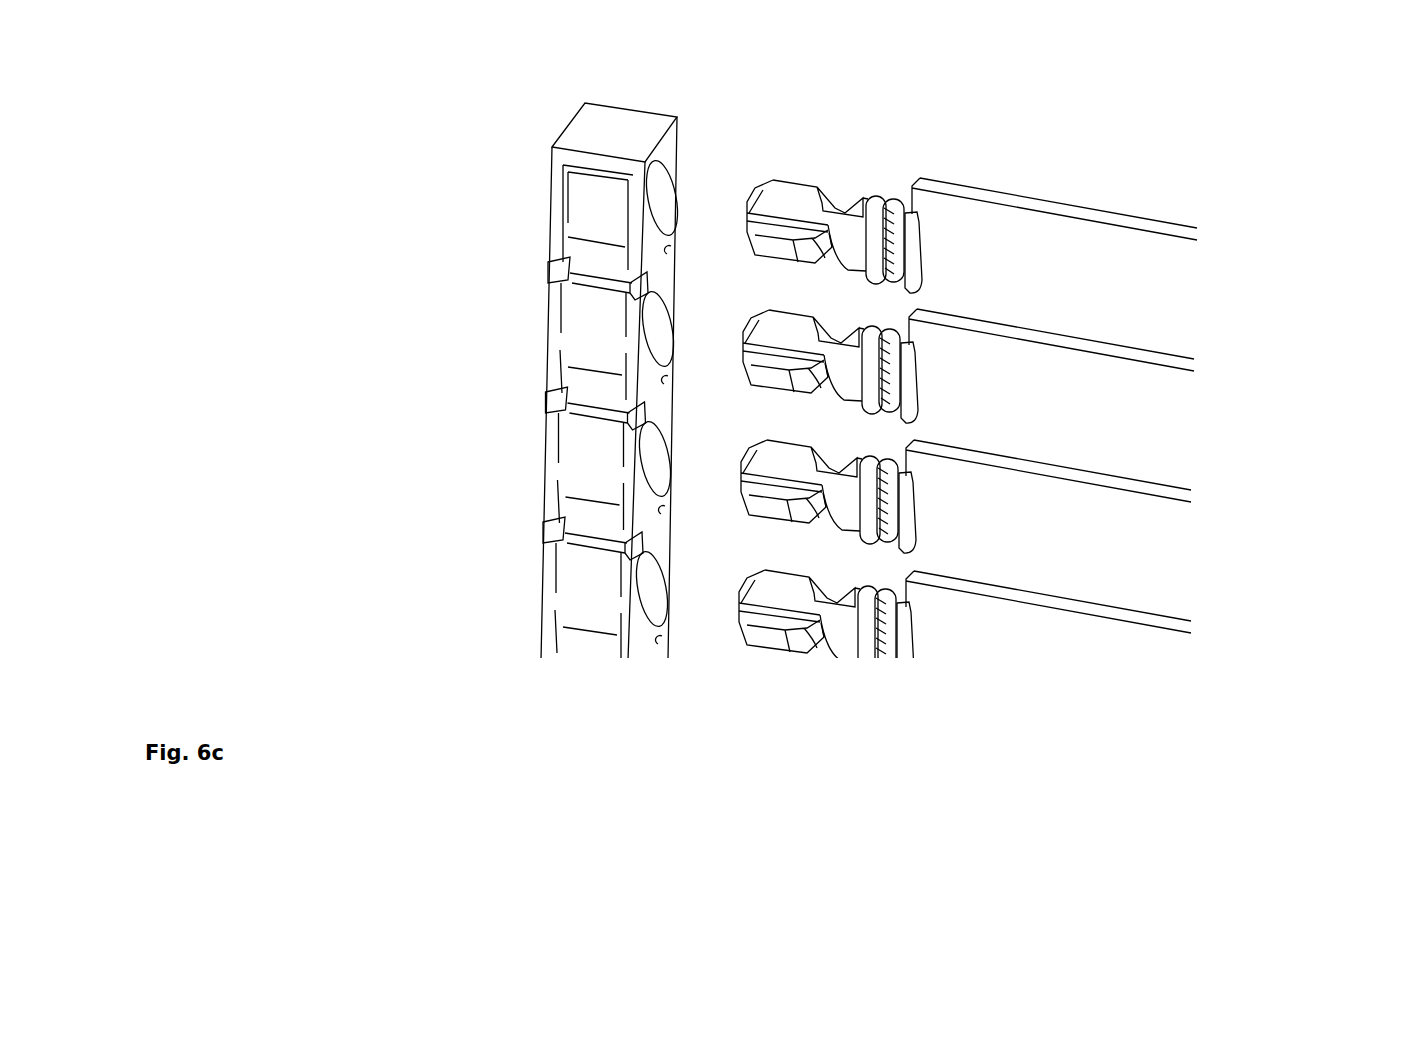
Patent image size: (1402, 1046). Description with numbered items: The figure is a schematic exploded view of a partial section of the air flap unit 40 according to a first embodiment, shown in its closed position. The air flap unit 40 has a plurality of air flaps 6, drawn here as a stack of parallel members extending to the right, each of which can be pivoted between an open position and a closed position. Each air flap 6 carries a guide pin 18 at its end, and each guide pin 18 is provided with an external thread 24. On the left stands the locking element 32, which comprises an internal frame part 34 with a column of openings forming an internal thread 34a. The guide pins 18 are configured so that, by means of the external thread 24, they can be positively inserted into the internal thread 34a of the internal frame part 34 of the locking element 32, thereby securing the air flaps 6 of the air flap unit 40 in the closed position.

The air flap 6 is at (1130, 243).
The guide pin 18 is at (775, 178).
The external thread 24 is at (840, 205).
The locking element 32 is at (486, 430).
The internal frame part 34 is at (622, 132).
The internal thread 34a is at (655, 225).
The air flap unit 40 is at (1298, 598).